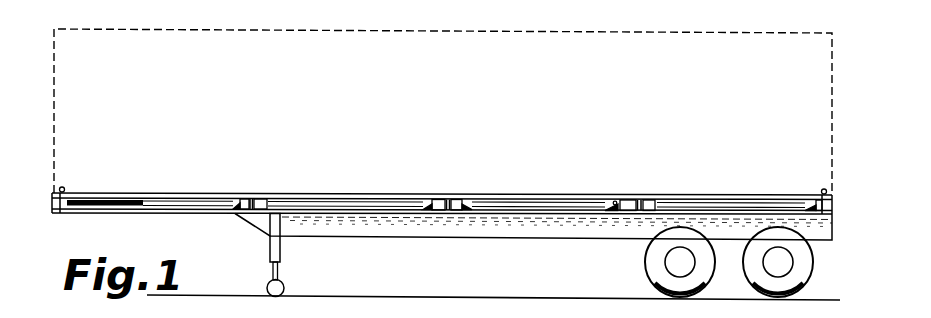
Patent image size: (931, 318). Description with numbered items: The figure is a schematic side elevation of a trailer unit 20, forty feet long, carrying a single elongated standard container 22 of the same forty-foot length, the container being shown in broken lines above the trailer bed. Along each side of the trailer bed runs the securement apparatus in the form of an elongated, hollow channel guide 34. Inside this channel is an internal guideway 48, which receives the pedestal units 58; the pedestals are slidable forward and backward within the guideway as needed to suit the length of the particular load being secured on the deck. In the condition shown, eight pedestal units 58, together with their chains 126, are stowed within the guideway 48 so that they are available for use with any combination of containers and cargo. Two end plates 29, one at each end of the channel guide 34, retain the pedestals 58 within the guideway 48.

The trailer unit 20 is at (250, 229).
The standard container 22 is at (240, 31).
The end plates 29 is at (53, 216).
The channel guide 34 is at (364, 195).
The internal guideway 48 is at (142, 200).
The pedestal units 58 is at (68, 199).
The chains 126 is at (611, 207).